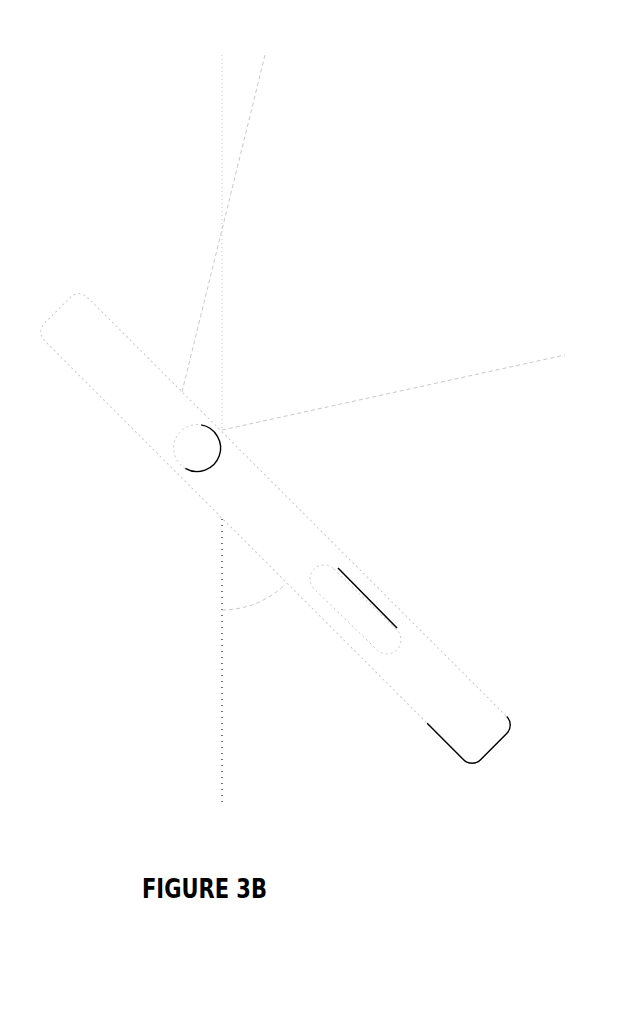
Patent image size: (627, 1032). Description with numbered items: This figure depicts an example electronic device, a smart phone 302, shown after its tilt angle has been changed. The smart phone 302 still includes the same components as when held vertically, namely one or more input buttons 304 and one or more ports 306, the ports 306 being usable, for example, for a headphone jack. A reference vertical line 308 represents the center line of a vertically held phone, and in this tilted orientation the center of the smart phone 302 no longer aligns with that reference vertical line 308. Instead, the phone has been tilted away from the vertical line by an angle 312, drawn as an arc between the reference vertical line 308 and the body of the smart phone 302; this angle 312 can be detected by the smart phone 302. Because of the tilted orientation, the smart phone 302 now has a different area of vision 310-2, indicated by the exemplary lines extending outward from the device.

The smart phone 302 is at (343, 649).
The input buttons 304 is at (397, 618).
The ports 306 is at (172, 467).
The reference vertical line 308 is at (222, 775).
The area of vision 310-2 is at (232, 192).
The angle 312 is at (262, 593).